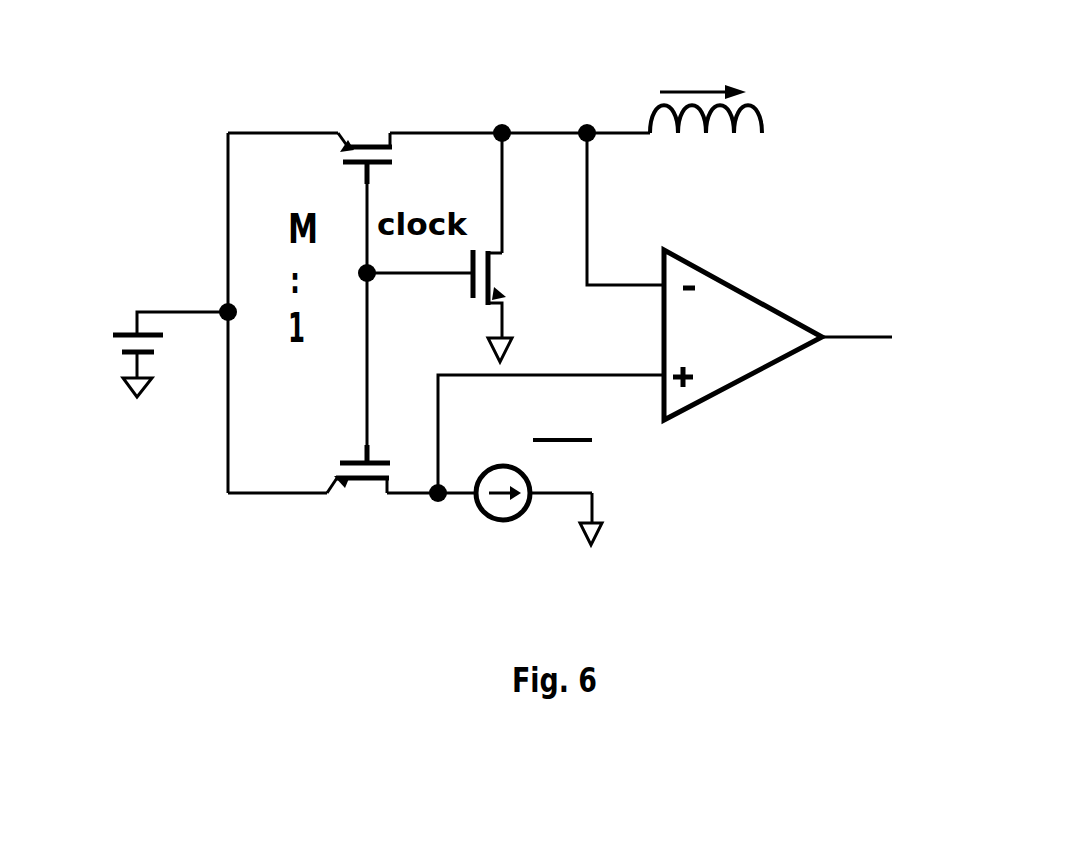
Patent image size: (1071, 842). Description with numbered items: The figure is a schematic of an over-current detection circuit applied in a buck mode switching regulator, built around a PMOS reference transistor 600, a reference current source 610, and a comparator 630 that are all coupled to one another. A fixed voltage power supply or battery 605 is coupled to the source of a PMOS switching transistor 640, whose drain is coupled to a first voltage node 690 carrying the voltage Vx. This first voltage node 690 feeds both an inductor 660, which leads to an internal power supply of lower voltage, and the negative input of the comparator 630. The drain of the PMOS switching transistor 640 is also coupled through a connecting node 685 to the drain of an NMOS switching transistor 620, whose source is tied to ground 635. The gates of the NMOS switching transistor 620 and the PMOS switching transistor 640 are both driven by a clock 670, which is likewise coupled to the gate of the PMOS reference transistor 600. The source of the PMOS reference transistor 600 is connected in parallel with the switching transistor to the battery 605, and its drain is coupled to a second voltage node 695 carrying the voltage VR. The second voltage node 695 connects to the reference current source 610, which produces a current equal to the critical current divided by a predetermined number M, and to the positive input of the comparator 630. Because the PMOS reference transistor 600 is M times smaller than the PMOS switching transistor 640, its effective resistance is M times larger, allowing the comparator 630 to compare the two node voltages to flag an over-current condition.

The PMOS reference transistor 600 is at (365, 480).
The fixed voltage power supply 605 is at (120, 333).
The reference current source 610 is at (523, 510).
The NMOS switching transistor 620 is at (493, 275).
The comparator 630 is at (740, 288).
The ground 635 is at (507, 337).
The PMOS switching transistor 640 is at (367, 142).
The inductor 660 is at (705, 135).
The clock 670 is at (367, 277).
The connecting node 685 is at (505, 123).
The first voltage node 690 is at (592, 127).
The second voltage node 695 is at (447, 500).